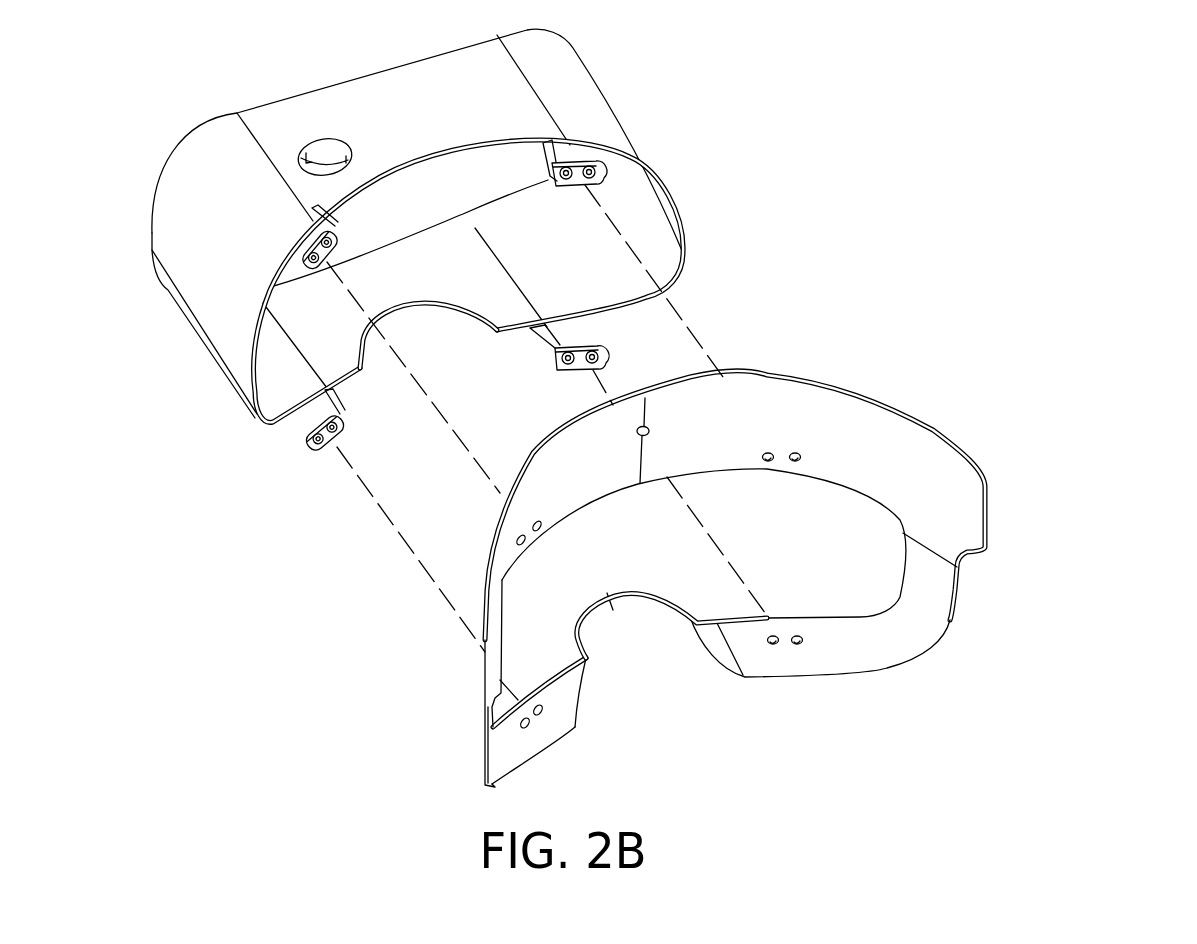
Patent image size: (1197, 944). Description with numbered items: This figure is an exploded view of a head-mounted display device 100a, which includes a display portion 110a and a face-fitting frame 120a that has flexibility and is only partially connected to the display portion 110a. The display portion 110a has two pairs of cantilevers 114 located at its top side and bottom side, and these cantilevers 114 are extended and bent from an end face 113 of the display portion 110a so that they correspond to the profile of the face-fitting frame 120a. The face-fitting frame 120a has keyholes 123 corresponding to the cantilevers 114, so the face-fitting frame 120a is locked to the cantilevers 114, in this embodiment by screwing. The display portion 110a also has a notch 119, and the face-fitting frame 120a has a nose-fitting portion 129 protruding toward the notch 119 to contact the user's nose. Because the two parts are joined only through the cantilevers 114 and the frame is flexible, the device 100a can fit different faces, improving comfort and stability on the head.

The head-mounted display device 100a is at (1098, 782).
The display portion 110a is at (215, 293).
The end face 113 is at (505, 142).
The cantilevers 114 is at (604, 170).
The notch 119 is at (437, 334).
The face-fitting frame 120a is at (918, 447).
The keyholes 123 is at (803, 457).
The nose-fitting portion 129 is at (655, 607).